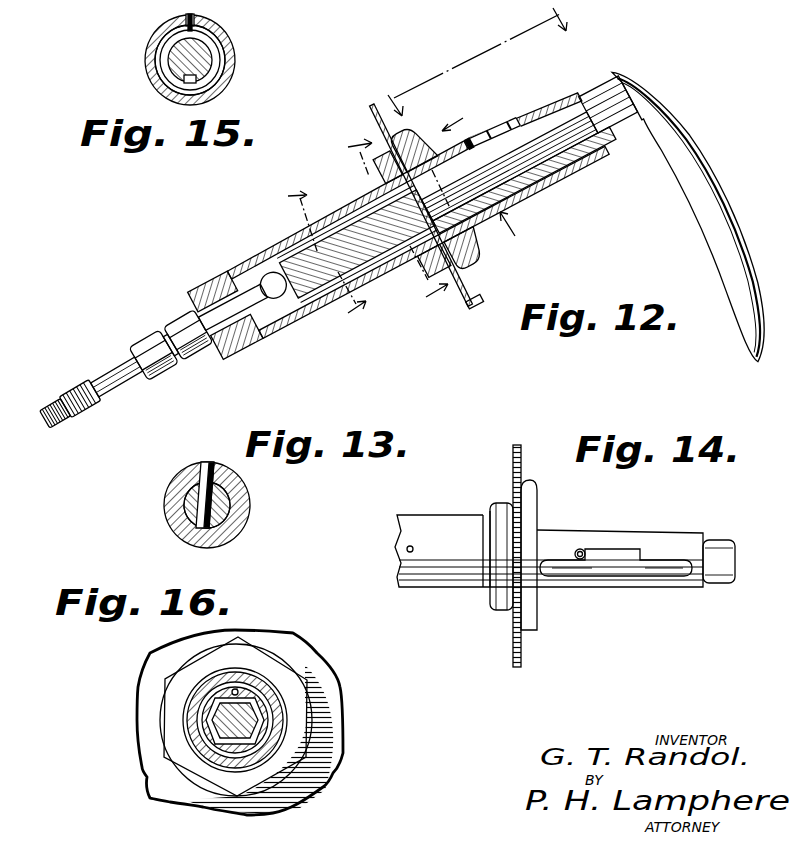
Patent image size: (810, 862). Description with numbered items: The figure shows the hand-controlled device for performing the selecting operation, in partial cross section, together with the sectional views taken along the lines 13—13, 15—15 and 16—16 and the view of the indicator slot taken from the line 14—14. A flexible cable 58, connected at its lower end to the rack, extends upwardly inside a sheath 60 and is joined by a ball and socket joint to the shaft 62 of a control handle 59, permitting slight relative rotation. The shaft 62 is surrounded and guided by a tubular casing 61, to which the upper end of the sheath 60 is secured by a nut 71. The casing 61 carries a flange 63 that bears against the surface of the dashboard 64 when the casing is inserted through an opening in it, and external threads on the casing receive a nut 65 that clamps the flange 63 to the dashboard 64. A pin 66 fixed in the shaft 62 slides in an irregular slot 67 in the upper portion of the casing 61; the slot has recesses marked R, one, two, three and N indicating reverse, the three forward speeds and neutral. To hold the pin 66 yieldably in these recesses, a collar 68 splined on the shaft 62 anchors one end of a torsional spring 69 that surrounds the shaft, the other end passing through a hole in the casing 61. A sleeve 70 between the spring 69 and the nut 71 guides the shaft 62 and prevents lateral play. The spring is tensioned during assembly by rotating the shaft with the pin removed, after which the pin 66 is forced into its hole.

In FIG. 12, the section line 13— 13 is at (473, 185).
In FIG. 12, the line 14— 14 is at (486, 66).
In FIG. 12, the section line 15— 15 is at (327, 261).
In FIG. 12, the section line 16— 16 is at (396, 223).
In FIG. 12, the flexible cable 58 is at (53, 398).
In FIG. 12, the control handle 59 is at (640, 100).
In FIG. 12, the sheath 60 is at (79, 388).
In FIG. 12, the tubular casing 61 is at (207, 288).
In FIG. 15, the tubular casing 61 is at (232, 66).
In FIG. 13, the tubular casing 61 is at (178, 528).
In FIG. 14, the tubular casing 61 is at (448, 532).
In FIG. 16, the tubular casing 61 is at (283, 719).
In FIG. 12, the shaft 62 is at (597, 102).
In FIG. 15, the shaft 62 is at (217, 45).
In FIG. 13, the shaft 62 is at (236, 506).
In FIG. 14, the shaft 62 is at (729, 542).
In FIG. 16, the shaft 62 is at (252, 692).
In FIG. 12, the flange 63 is at (401, 153).
In FIG. 14, the flange 63 is at (529, 492).
In FIG. 12, the dashboard 64 is at (374, 102).
In FIG. 14, the dashboard 64 is at (521, 456).
In FIG. 16, the dashboard 64 is at (328, 678).
In FIG. 12, the nut 65 is at (375, 178).
In FIG. 14, the nut 65 is at (503, 512).
In FIG. 16, the nut 65 is at (298, 690).
In FIG. 12, the pin 66 is at (467, 147).
In FIG. 13, the pin 66 is at (216, 462).
In FIG. 14, the pin 66 is at (585, 549).
In FIG. 13, the irregular slot 67 is at (206, 462).
In FIG. 14, the irregular slot 67 is at (604, 578).
In FIG. 12, the collar 68 is at (410, 252).
In FIG. 16, the collar 68 is at (192, 722).
In FIG. 12, the torsional spring 69 is at (364, 262).
In FIG. 15, the torsional spring 69 is at (215, 80).
In FIG. 12, the sleeve 70 is at (305, 292).
In FIG. 12, the nut 71 is at (210, 362).